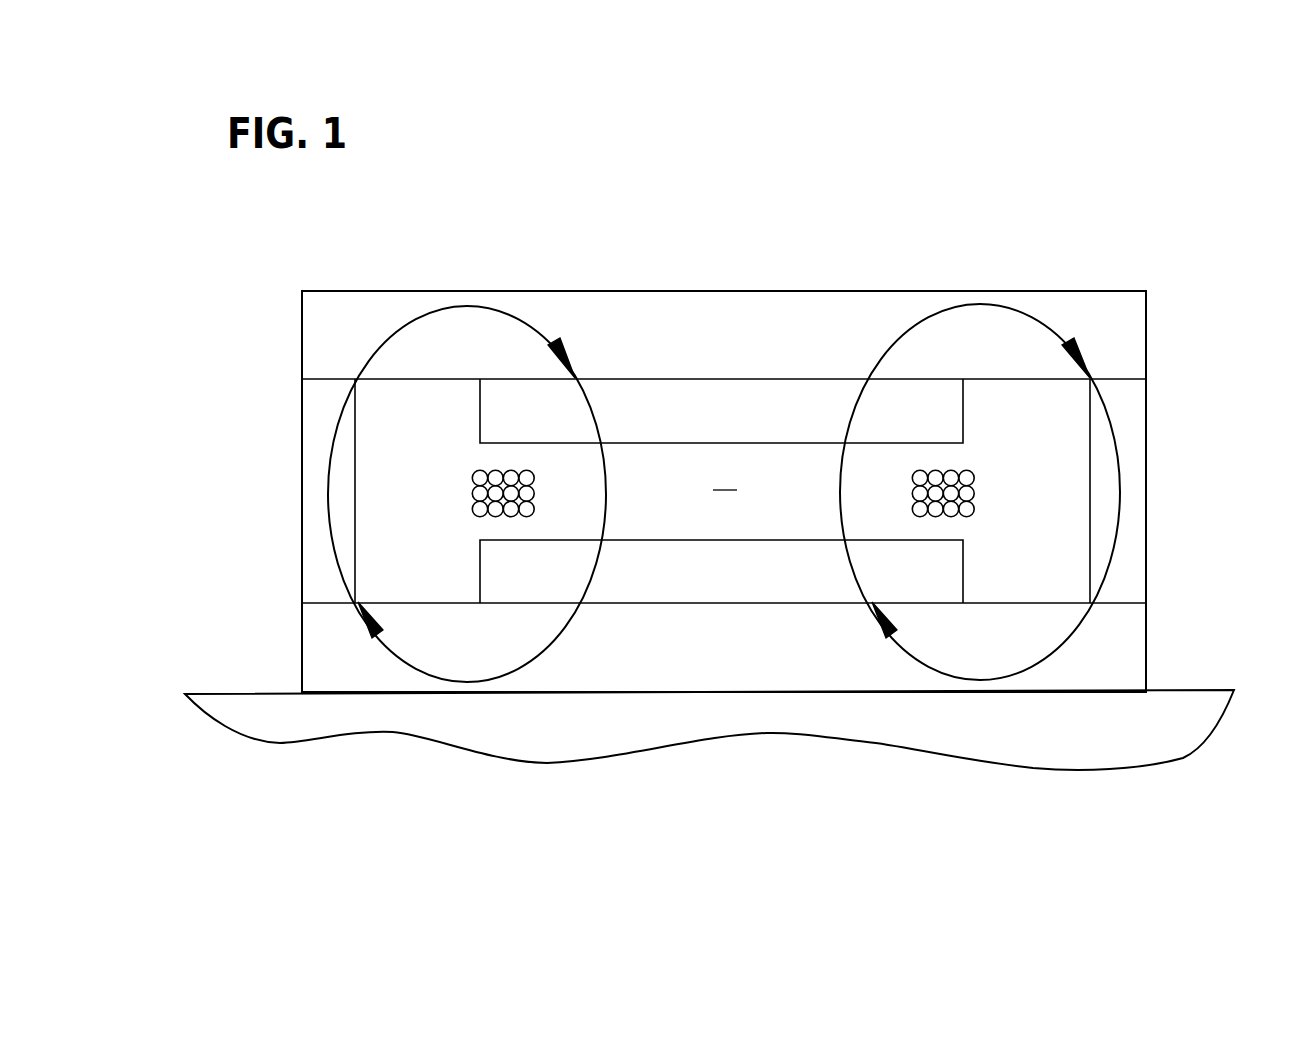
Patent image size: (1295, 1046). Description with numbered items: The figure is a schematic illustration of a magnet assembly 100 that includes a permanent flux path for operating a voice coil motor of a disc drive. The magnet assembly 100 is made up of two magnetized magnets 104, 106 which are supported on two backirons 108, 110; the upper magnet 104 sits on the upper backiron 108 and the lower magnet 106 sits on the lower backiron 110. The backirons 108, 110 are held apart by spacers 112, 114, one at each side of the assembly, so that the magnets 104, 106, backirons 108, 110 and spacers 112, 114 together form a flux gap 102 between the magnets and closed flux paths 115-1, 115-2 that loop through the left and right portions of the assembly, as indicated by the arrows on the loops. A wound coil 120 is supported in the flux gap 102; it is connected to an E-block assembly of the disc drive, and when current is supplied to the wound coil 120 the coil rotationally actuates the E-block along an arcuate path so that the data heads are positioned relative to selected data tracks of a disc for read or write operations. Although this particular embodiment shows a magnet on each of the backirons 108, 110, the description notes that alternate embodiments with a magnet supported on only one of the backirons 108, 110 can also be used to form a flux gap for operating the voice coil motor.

The magnet assembly 100 is at (1050, 175).
The flux gap 102 is at (725, 490).
The magnet 104 is at (643, 413).
The magnet 106 is at (677, 588).
The backiron 108 is at (1127, 342).
The backiron 110 is at (1127, 660).
The spacer 112 is at (345, 518).
The spacer 114 is at (1108, 488).
The flux path 115-1 is at (607, 490).
The flux path 115-2 is at (1025, 313).
The wound coil 120 is at (477, 477).